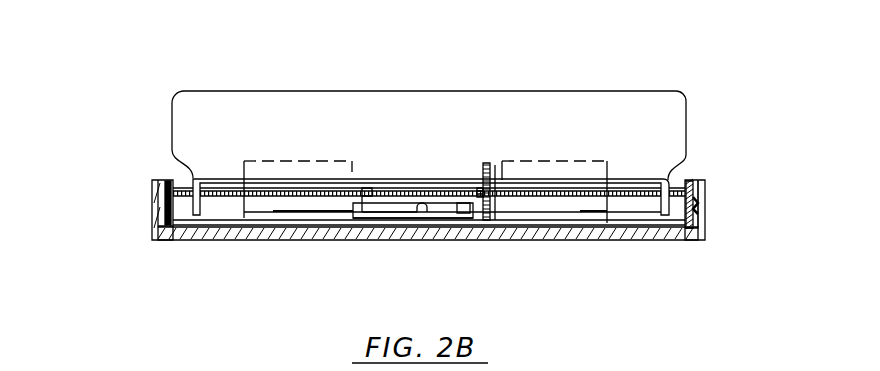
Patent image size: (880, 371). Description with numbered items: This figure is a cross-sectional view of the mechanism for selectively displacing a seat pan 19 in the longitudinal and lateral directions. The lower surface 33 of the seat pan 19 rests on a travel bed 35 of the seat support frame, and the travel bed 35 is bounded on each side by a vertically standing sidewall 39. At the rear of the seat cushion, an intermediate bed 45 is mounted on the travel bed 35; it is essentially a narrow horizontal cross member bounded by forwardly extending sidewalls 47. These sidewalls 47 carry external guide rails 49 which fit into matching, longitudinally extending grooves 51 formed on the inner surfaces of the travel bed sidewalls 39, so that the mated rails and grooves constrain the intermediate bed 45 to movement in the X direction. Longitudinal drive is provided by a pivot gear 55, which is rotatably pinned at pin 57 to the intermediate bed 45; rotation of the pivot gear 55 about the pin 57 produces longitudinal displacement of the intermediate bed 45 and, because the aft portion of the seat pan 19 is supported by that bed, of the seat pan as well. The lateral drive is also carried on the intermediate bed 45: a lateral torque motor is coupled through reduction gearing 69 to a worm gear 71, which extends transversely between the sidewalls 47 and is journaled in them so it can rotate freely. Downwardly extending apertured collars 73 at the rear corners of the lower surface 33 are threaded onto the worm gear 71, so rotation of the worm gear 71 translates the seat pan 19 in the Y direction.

The seat pan 19 is at (241, 91).
The lower surface 33 is at (220, 178).
The travel bed 35 is at (298, 241).
The sidewalls 39 is at (152, 217).
The intermediate bed 45 is at (293, 225).
The sidewalls 47 is at (688, 182).
The guide rails 49 is at (698, 209).
The grooves 51 is at (697, 205).
The pivot gear 55 is at (392, 212).
The pin 57 is at (435, 214).
The reduction gearing 69 is at (488, 163).
The worm gear 71 is at (623, 196).
The apertured collars 73 is at (203, 209).